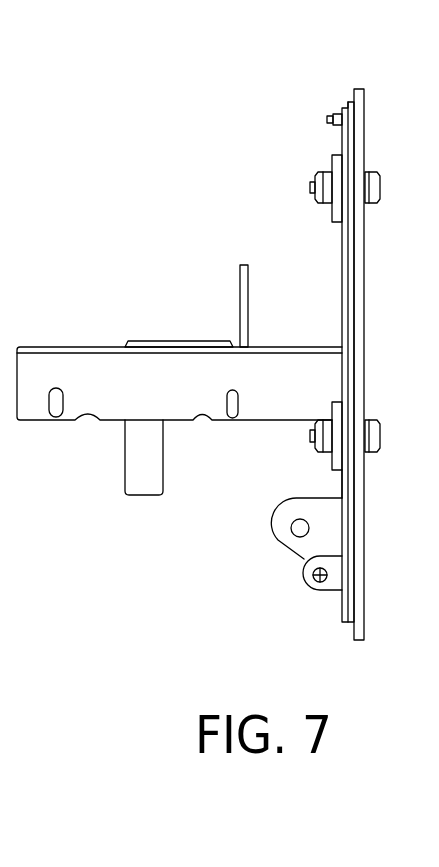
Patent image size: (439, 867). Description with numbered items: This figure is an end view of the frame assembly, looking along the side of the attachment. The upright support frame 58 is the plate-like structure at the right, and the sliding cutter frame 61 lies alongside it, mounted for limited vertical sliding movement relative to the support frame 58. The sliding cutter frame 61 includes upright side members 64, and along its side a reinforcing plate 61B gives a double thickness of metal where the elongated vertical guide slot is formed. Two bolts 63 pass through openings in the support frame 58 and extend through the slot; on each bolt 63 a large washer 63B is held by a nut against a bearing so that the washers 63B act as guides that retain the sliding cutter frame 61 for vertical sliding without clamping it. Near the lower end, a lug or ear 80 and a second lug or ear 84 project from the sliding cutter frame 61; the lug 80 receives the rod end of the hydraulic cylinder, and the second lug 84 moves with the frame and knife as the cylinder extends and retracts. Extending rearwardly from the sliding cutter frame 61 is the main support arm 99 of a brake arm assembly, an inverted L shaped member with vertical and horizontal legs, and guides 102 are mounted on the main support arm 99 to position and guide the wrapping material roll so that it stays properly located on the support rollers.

The support frame 58 is at (357, 89).
The sliding cutter frame 61 is at (342, 258).
The reinforcing plate 61B is at (342, 335).
The bolt 63 is at (316, 188).
The large washer 63B is at (332, 163).
The upright side member 64 is at (340, 480).
The lug or ear 80 is at (275, 523).
The second lug or ear 84 is at (296, 590).
The main support arm 99 is at (192, 400).
The guide 102 is at (240, 305).